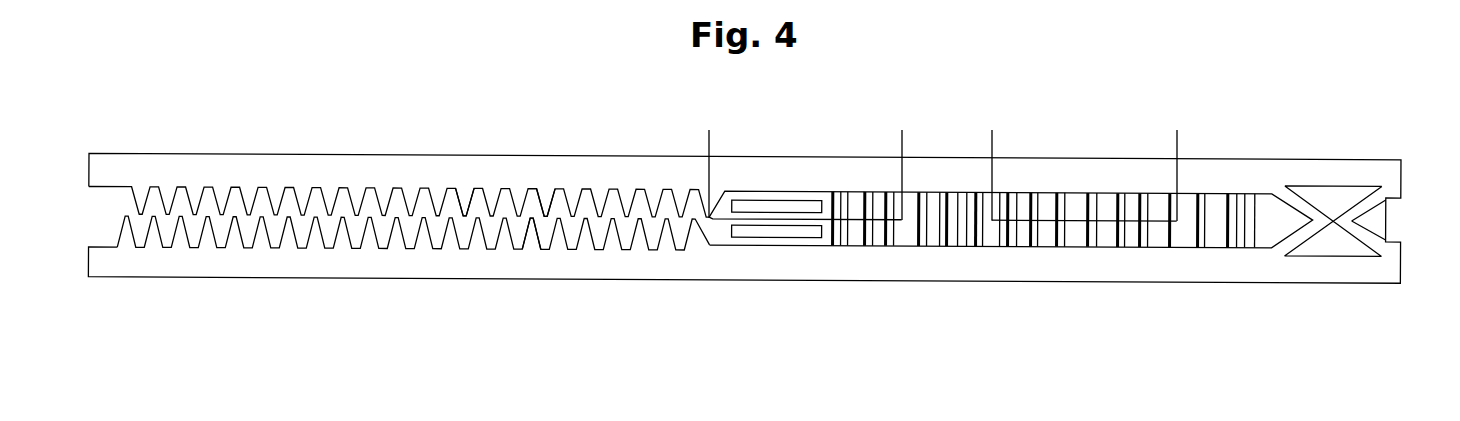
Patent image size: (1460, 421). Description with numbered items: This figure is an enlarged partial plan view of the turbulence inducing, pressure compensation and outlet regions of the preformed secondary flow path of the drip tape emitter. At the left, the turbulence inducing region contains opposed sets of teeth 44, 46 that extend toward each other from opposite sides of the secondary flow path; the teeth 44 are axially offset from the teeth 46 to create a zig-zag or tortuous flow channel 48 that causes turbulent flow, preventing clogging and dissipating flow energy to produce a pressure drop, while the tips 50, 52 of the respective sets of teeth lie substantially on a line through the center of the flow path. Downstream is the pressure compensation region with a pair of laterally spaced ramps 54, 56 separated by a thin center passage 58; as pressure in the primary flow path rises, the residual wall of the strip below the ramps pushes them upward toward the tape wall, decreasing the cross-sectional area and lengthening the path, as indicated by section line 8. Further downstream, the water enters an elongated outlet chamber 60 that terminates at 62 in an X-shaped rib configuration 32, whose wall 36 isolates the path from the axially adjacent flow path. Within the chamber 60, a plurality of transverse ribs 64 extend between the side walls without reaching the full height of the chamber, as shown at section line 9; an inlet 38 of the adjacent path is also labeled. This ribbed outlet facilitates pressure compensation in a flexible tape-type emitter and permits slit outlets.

The X-shaped end 32 is at (1345, 178).
The wall 36 is at (1372, 202).
The inlets 38 is at (1355, 228).
The teeth 44 is at (283, 190).
The teeth 46 is at (297, 240).
The tortuous flow channel 48 is at (455, 200).
The tips 50 is at (547, 218).
The tips 52 is at (537, 222).
The ramp 54 is at (775, 207).
The ramp 56 is at (782, 232).
The thin center passage 58 is at (807, 218).
The elongated chamber 60 is at (978, 242).
The chamber termination 62 is at (1256, 228).
The transverse ribs 64 is at (1158, 235).
The section line 8- 8 is at (806, 158).
The section line 9- 9 is at (1085, 158).